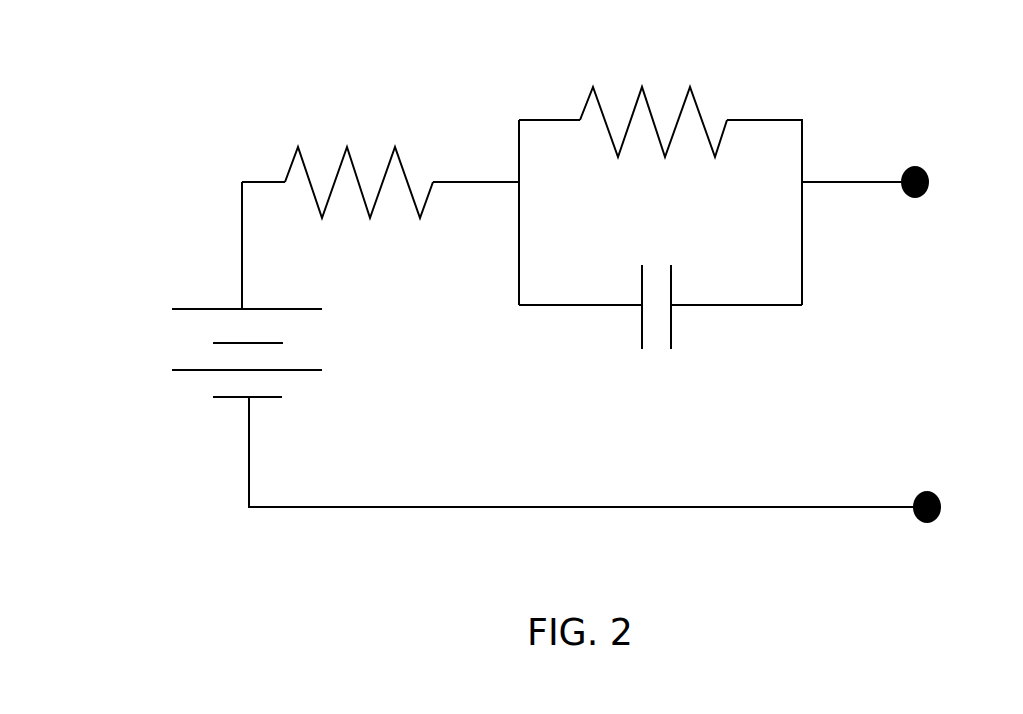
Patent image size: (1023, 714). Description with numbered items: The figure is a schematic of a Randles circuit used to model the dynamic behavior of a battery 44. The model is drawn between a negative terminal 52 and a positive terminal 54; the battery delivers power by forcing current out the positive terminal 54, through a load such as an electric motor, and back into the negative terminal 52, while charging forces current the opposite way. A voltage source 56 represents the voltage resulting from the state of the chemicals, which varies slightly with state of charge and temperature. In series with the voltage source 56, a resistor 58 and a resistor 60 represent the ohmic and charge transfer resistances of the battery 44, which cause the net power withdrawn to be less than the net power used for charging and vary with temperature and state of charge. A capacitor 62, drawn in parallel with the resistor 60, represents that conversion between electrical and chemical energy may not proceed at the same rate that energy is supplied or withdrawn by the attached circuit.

The battery 44 is at (184, 191).
The negative terminal 52 is at (932, 487).
The positive terminal 54 is at (923, 200).
The voltage source 56 is at (170, 338).
The resistor 58 is at (341, 160).
The resistor 60 is at (637, 97).
The capacitor 62 is at (643, 334).